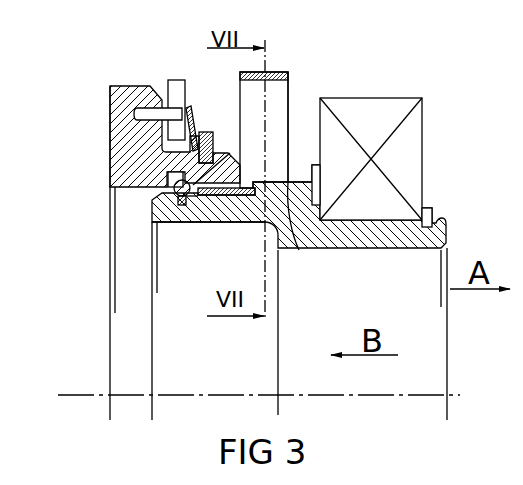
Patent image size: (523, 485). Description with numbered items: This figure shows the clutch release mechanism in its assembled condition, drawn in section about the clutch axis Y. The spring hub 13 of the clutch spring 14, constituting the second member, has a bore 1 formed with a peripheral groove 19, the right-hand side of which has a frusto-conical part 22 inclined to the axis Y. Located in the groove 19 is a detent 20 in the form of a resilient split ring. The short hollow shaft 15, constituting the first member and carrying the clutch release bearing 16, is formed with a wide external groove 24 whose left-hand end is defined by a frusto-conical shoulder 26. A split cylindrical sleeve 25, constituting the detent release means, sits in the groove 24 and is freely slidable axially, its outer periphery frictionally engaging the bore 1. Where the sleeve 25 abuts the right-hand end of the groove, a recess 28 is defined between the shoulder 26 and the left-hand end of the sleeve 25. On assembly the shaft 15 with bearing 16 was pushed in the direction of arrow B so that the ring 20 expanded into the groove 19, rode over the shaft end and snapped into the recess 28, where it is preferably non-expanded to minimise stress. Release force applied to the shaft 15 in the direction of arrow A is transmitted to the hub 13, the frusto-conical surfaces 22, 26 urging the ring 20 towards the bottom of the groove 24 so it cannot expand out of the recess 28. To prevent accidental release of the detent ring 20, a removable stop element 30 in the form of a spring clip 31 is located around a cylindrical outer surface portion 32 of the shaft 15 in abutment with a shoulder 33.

The bore 1 is at (137, 184).
The spring hub 13 is at (118, 103).
The clutch spring 14 is at (175, 88).
The short hollow shaft 15 is at (367, 240).
The clutch release bearing 16 is at (388, 110).
The peripheral groove 19 is at (168, 178).
The detent 20 is at (160, 200).
The frusto conical part of groove 22 is at (228, 185).
The external groove 24 is at (207, 200).
The split cylindrical sleeve 25 is at (226, 196).
The frusto conical shoulder 26 is at (178, 206).
The recess 28 is at (196, 198).
The removable stop element 30 is at (252, 107).
The spring clip 31 is at (283, 95).
The cylindrical outer surface portion 32 is at (295, 240).
The shoulder 33 is at (290, 180).
The axis Y is at (392, 396).